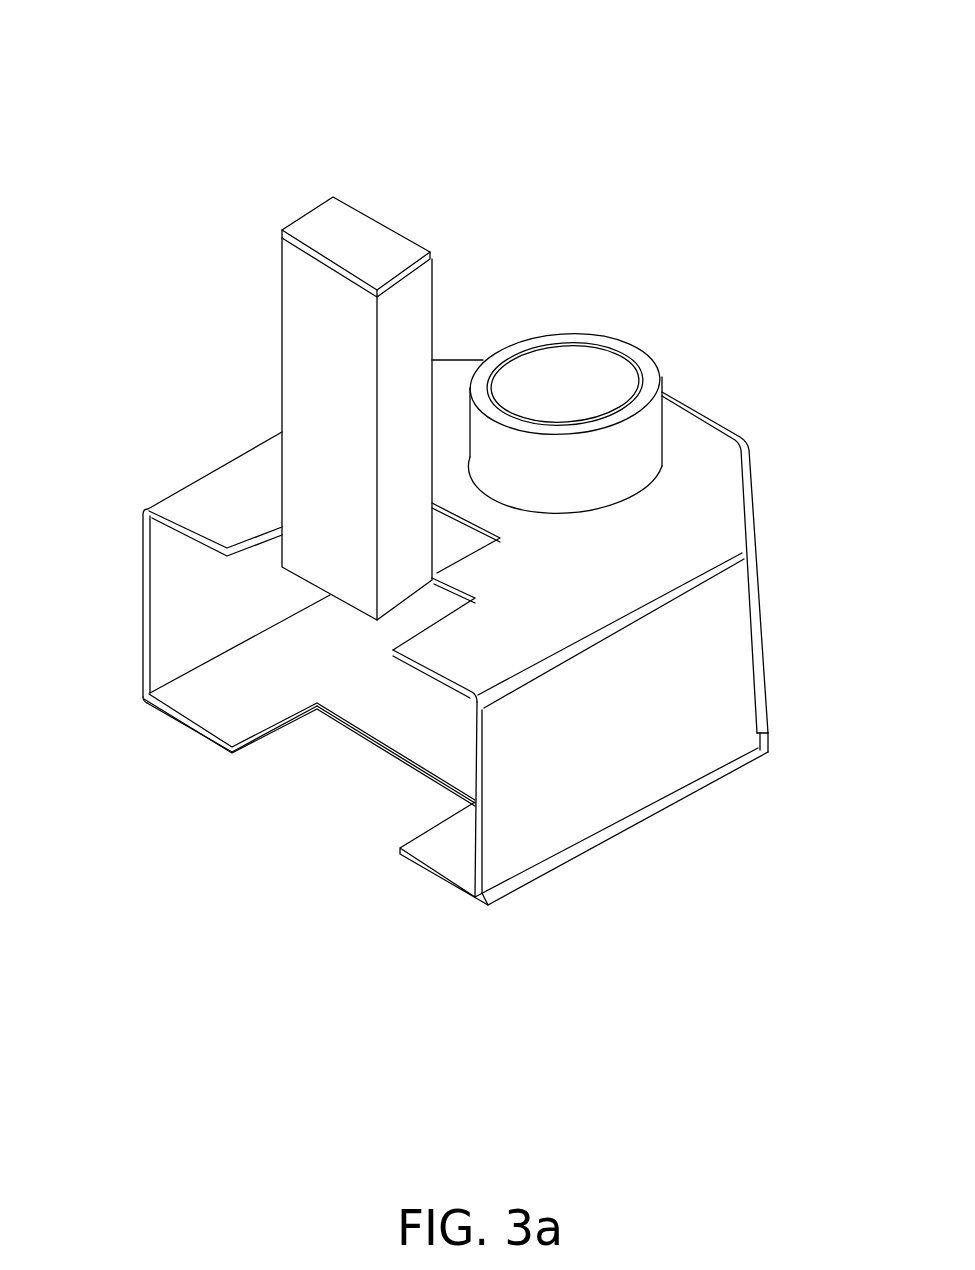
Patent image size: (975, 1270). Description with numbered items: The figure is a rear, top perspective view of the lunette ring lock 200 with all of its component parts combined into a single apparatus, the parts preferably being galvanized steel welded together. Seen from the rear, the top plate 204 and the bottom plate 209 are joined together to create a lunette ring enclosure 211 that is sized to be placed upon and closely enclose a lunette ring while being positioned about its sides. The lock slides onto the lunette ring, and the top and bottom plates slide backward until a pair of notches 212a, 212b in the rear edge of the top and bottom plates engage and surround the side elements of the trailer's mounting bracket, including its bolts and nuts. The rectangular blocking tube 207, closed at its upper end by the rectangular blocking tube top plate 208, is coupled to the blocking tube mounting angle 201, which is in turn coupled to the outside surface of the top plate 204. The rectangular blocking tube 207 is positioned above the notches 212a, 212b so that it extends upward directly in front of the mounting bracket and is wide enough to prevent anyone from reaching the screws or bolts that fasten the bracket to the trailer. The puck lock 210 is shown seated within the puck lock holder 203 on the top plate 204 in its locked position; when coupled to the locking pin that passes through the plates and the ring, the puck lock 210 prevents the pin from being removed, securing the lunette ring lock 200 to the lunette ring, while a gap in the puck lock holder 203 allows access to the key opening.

The lunette ring lock 200 is at (218, 58).
The blocking tube mounting angle 201 is at (452, 548).
The puck lock holder 203 is at (632, 448).
The top plate 204 is at (633, 760).
The rectangular blocking tube 207 is at (298, 335).
The rectangular blocking tube top plate 208 is at (313, 219).
The bottom plate 209 is at (247, 665).
The puck lock 210 is at (600, 352).
The lunette ring enclosure 211 is at (453, 748).
The notch 212a is at (422, 617).
The notch 212b is at (308, 770).